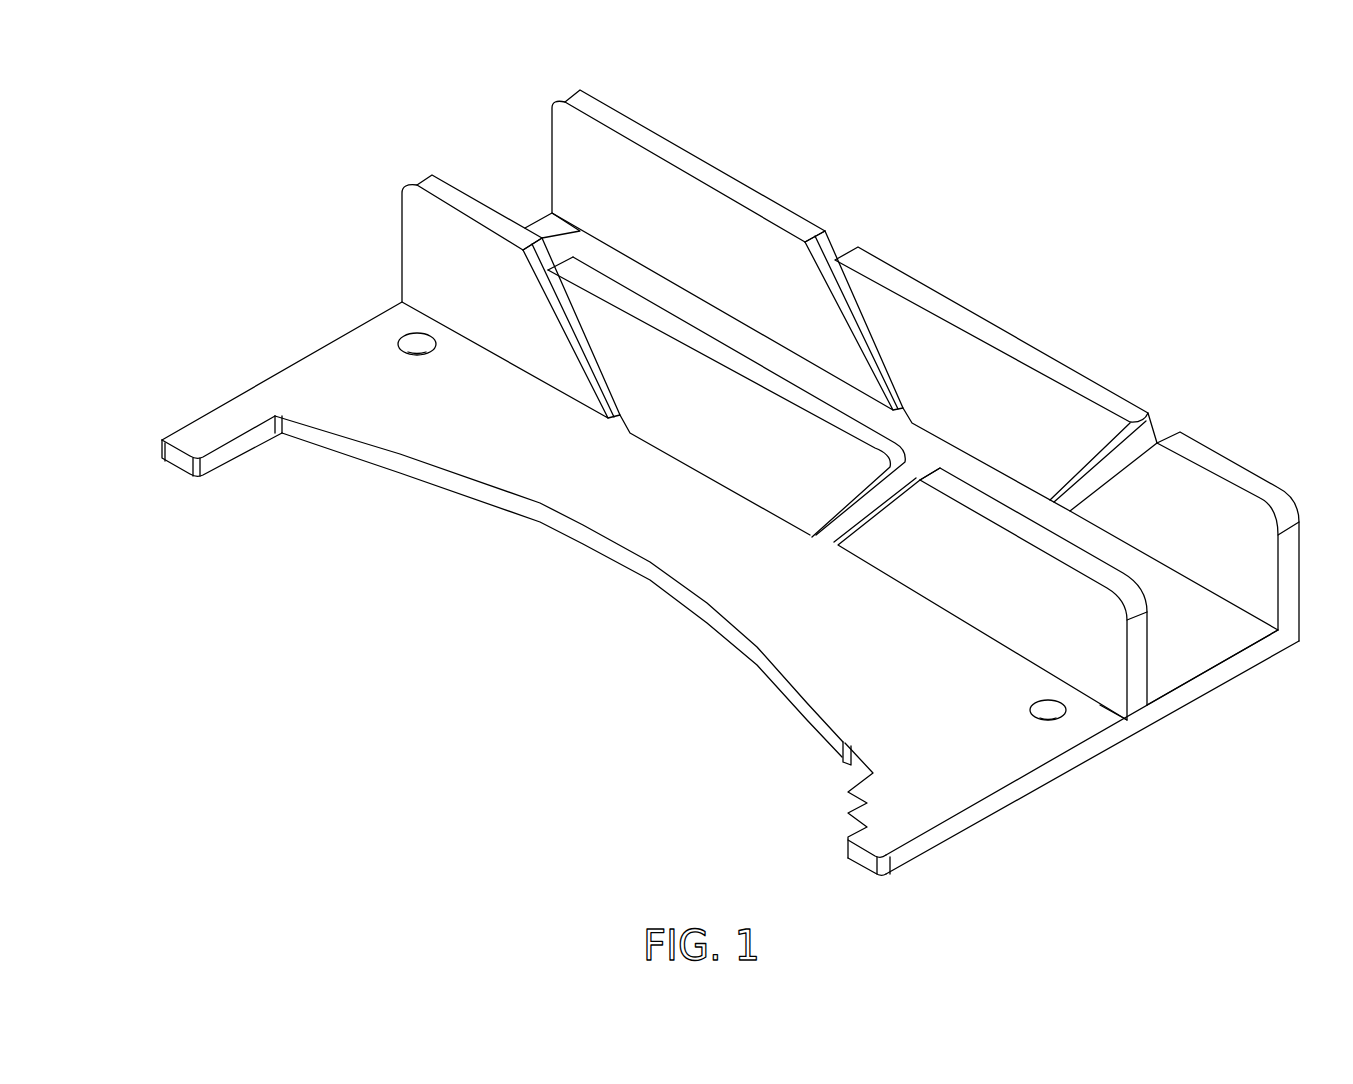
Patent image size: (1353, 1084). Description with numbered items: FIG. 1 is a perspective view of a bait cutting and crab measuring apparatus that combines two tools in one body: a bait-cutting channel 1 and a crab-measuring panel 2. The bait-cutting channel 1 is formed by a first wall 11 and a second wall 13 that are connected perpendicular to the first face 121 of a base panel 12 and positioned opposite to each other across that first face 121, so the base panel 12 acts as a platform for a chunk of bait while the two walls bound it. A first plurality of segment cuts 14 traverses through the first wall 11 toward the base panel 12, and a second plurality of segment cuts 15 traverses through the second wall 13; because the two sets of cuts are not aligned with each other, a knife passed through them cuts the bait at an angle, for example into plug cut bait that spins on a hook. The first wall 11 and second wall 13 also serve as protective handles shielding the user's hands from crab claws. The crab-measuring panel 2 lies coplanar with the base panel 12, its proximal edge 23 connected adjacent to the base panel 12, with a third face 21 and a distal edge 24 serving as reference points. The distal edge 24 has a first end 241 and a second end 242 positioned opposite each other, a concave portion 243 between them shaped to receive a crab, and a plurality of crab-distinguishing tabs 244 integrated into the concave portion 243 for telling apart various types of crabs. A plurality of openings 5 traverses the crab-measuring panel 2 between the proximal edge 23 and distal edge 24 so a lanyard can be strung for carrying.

The bait-cutting channel 1 is at (848, 390).
The crab-measuring panel 2 is at (701, 564).
The plurality of openings 5 is at (413, 336).
The first wall 11 is at (976, 388).
The base panel 12 is at (1222, 675).
The second wall 13 is at (758, 456).
The first plurality of segment cuts 14 is at (842, 238).
The second plurality of segment cuts 15 is at (553, 250).
The third face 21 is at (694, 534).
The proximal edge 23 is at (1128, 723).
The distal edge 24 is at (803, 826).
The first face 121 is at (1205, 637).
The first end 241 is at (175, 421).
The second end 242 is at (917, 871).
The concave portion 243 is at (650, 565).
The plurality of crab-distinguishing tabs 244 is at (790, 800).